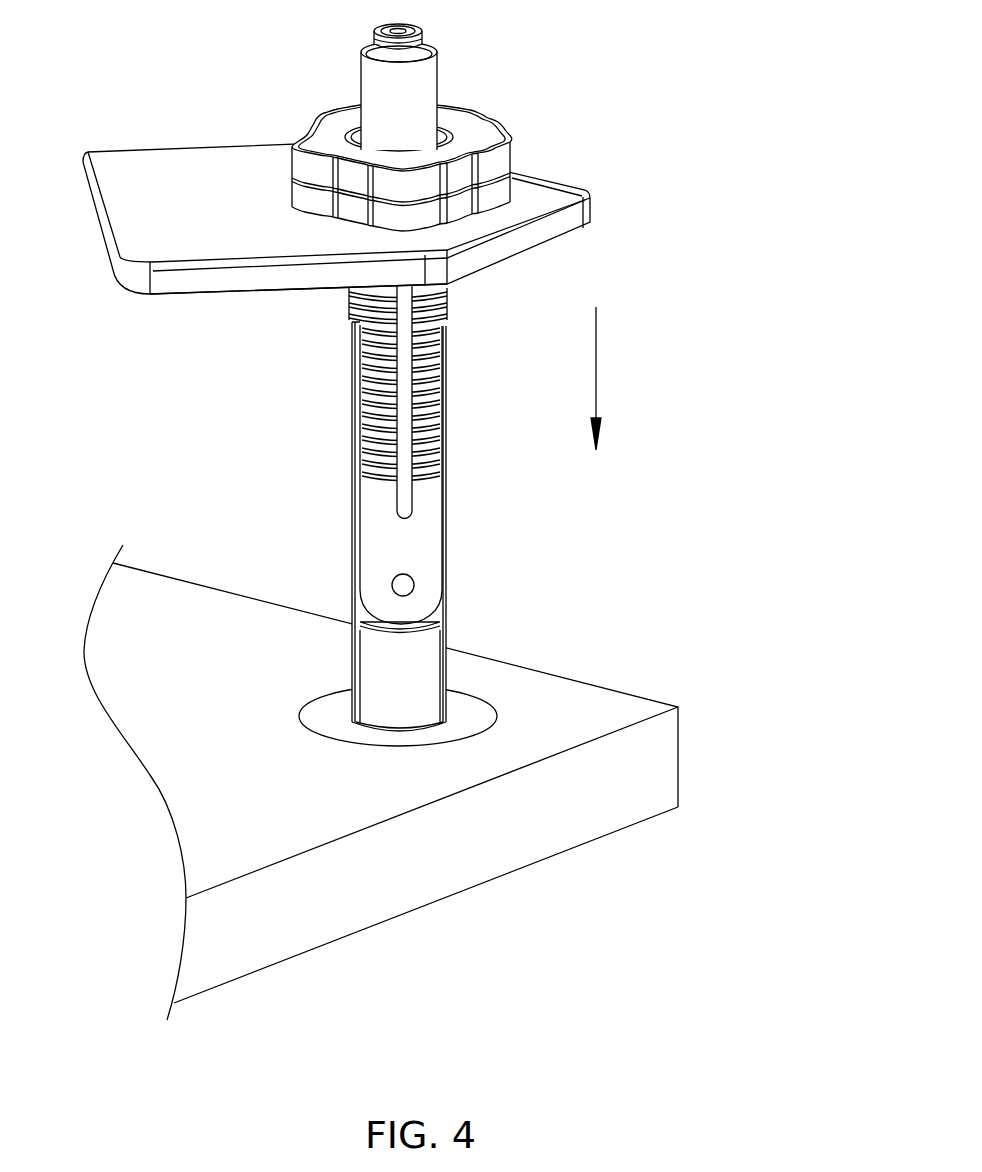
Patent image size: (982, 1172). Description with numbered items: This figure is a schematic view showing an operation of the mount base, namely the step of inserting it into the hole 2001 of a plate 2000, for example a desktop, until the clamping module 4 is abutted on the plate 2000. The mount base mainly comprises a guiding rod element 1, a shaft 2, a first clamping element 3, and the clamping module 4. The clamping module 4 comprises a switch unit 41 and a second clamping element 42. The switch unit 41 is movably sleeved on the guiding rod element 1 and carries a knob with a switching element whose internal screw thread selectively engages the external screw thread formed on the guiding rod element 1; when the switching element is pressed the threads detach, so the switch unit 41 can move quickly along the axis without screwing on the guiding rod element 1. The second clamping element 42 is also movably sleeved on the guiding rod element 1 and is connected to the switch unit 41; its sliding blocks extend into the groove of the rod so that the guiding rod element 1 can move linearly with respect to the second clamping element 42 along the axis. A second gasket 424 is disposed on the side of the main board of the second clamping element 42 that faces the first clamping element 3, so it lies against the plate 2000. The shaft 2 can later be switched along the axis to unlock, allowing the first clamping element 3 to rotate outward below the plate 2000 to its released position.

The guiding rod element 1 is at (430, 533).
The shaft 2 is at (423, 38).
The first clamping element 3 is at (413, 647).
The clamping module 4 is at (500, 162).
The switch unit 41 is at (300, 165).
The second clamping element 42 is at (155, 150).
The second gasket 424 is at (222, 291).
The plate 2000 is at (655, 757).
The hole 2001 is at (465, 707).